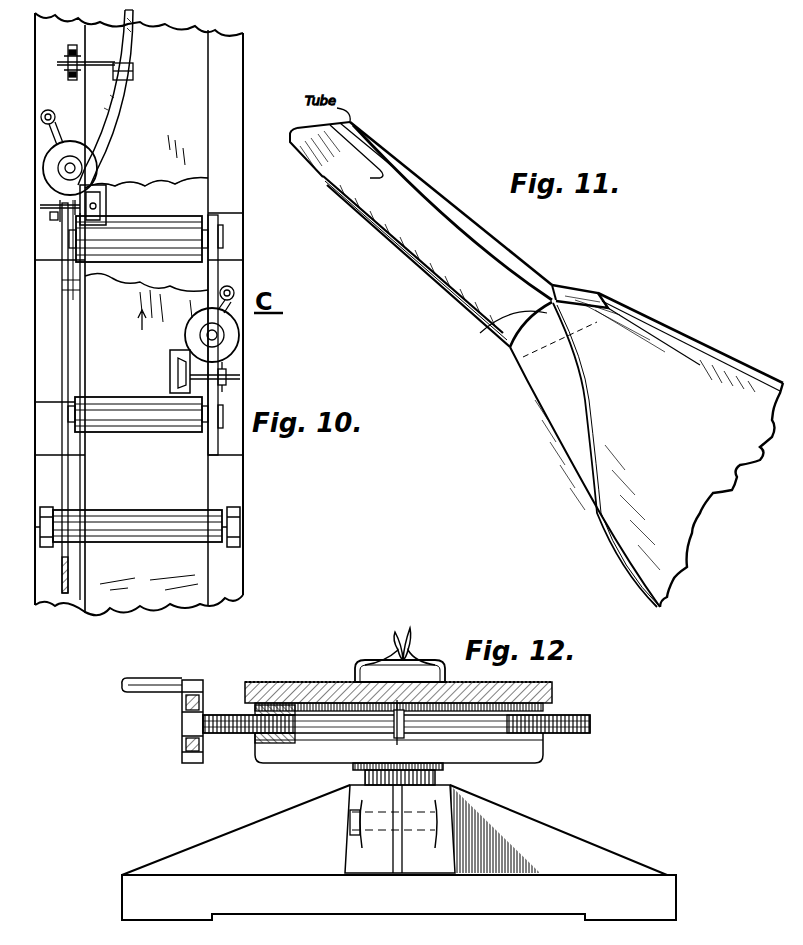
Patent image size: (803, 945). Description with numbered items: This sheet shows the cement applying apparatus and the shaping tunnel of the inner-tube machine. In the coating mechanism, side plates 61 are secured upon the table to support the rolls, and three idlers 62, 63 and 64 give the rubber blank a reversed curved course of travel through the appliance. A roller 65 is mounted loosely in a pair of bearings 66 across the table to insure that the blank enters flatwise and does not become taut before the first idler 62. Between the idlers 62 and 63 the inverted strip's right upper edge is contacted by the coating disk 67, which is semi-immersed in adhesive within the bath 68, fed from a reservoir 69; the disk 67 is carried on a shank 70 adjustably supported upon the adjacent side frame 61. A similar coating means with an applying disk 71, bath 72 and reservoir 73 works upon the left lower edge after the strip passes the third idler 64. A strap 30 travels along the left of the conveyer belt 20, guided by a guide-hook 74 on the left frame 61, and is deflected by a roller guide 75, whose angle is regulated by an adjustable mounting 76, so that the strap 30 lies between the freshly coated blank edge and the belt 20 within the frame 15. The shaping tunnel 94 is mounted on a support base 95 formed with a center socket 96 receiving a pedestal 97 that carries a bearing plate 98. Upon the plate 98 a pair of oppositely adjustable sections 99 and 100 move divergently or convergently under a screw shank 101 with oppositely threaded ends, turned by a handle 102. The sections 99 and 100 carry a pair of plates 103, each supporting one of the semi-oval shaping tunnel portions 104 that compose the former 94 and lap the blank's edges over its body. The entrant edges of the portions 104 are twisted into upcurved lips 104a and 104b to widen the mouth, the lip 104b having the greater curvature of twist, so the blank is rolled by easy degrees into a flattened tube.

In FIG. 10, the frame 15 is at (228, 108).
In FIG. 10, the conveyer belt 20 is at (127, 319).
In FIG. 10, the strap 30 is at (110, 118).
In FIG. 10, the side plates 61 is at (215, 262).
In FIG. 10, the first idler 62 is at (192, 213).
In FIG. 10, the second idler 63 is at (168, 432).
In FIG. 10, the third idler 64 is at (163, 270).
In FIG. 10, the roller 65 is at (162, 512).
In FIG. 10, the bearings 66 is at (50, 510).
In FIG. 10, the coating disk 67 is at (178, 367).
In FIG. 10, the bath 68 is at (176, 378).
In FIG. 10, the reservoir 69 is at (232, 336).
In FIG. 10, the shank 70 is at (228, 377).
In FIG. 10, the applying disk 71 is at (146, 177).
In FIG. 10, the bath 72 is at (98, 185).
In FIG. 10, the reservoir 73 is at (70, 141).
In FIG. 10, the guide-hook 74 is at (72, 288).
In FIG. 10, the roller guide 75 is at (133, 74).
In FIG. 10, the adjustable mounting 76 is at (67, 56).
In FIG. 11, the shaping tunnel 94 is at (432, 164).
In FIG. 12, the shaping tunnel 94 is at (413, 656).
In FIG. 12, the support base 95 is at (399, 852).
In FIG. 12, the center socket 96 is at (440, 822).
In FIG. 12, the pedestal 97 is at (443, 770).
In FIG. 12, the bearing plate 98 is at (530, 752).
In FIG. 12, the adjusting section 99 is at (255, 742).
In FIG. 12, the adjusting section 100 is at (545, 710).
In FIG. 12, the screw shank 101 is at (343, 698).
In FIG. 12, the handle 102 is at (172, 696).
In FIG. 12, the plates 103 is at (282, 682).
In FIG. 11, the shaping tunnel portions 104 is at (527, 270).
In FIG. 12, the shaping tunnel portions 104 is at (378, 660).
In FIG. 11, the upcurved lip 104a is at (488, 333).
In FIG. 12, the upcurved lip 104a is at (396, 638).
In FIG. 11, the upcurved lip 104b is at (563, 289).
In FIG. 12, the upcurved lip 104b is at (411, 628).